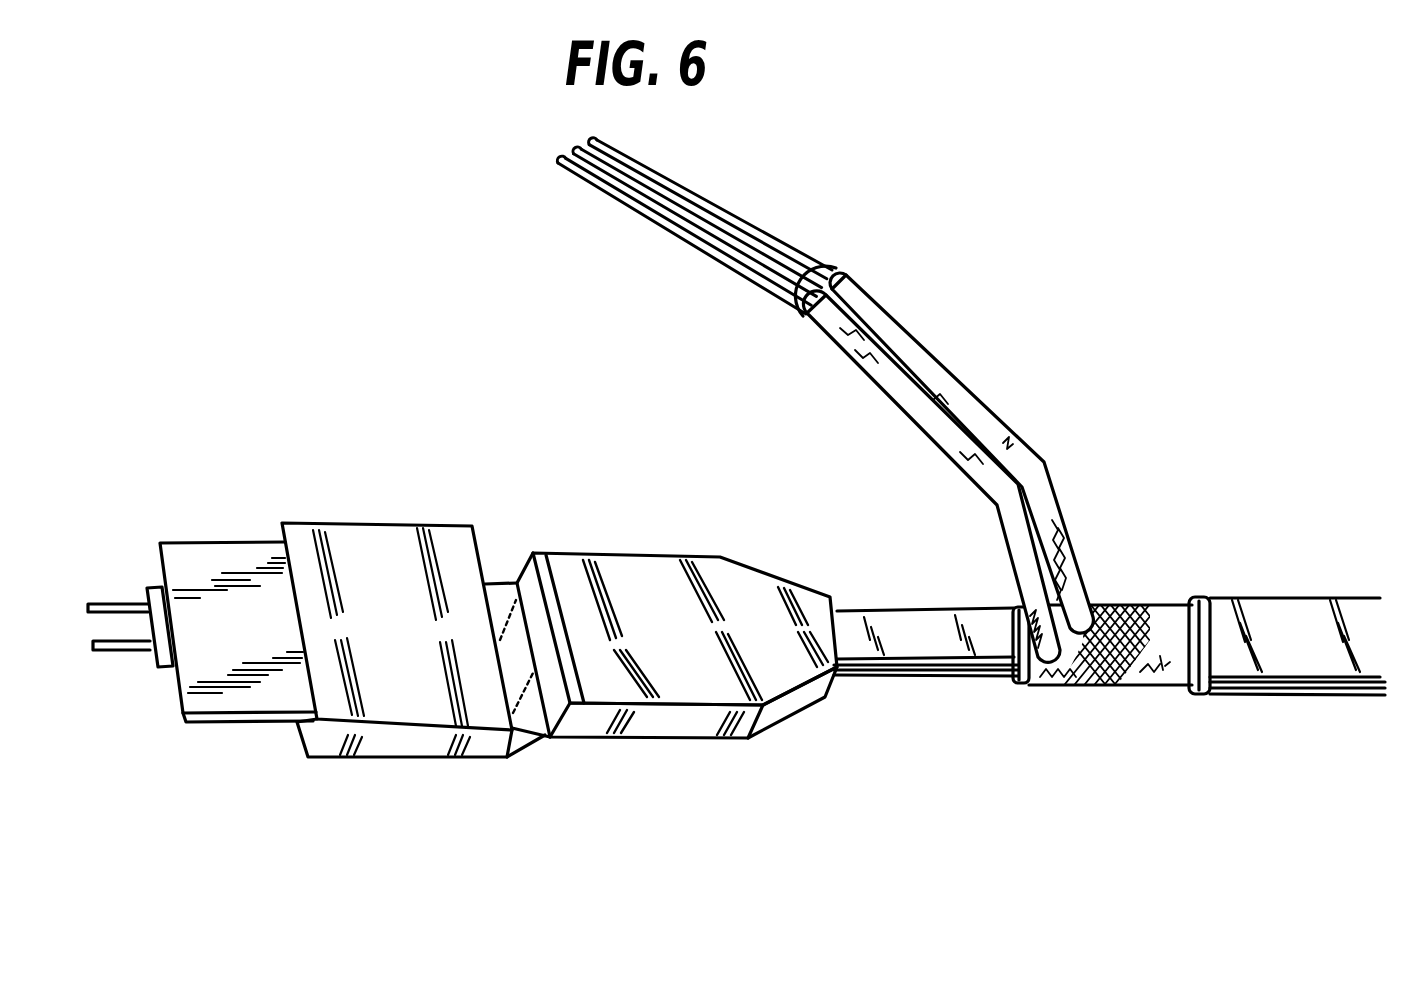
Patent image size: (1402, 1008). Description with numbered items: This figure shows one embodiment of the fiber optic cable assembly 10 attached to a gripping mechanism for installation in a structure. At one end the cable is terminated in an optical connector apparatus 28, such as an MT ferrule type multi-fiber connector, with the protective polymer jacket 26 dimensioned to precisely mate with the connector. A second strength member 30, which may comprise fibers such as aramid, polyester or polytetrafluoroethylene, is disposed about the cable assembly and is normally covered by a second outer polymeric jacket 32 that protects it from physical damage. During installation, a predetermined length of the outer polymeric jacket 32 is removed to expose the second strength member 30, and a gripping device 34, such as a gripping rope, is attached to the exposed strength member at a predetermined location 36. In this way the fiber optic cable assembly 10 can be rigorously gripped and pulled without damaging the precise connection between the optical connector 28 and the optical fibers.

The fiber optic cable assembly 10 is at (1132, 309).
The protective polymer jacket 26 is at (909, 693).
The optical connector apparatus 28 is at (482, 763).
The second strength member 30 is at (1052, 464).
The second outer polymeric jacket 32 is at (1298, 716).
The gripping device 34 is at (630, 246).
The predetermined location 36 is at (858, 266).